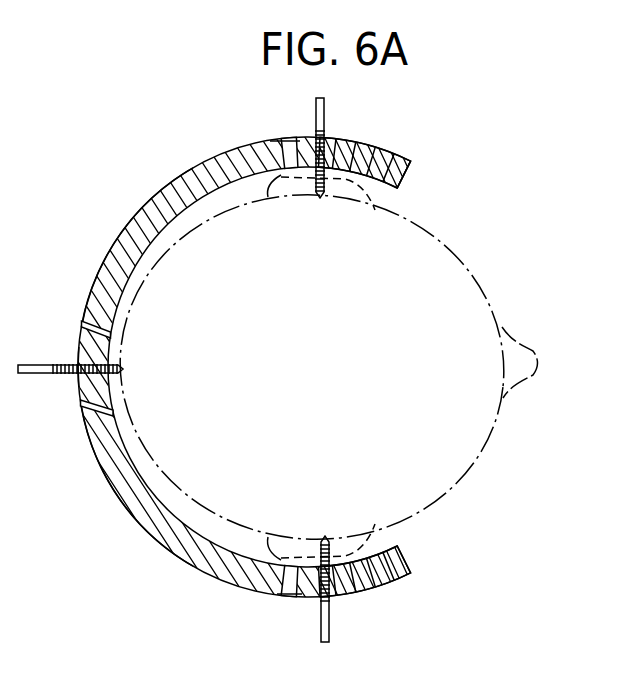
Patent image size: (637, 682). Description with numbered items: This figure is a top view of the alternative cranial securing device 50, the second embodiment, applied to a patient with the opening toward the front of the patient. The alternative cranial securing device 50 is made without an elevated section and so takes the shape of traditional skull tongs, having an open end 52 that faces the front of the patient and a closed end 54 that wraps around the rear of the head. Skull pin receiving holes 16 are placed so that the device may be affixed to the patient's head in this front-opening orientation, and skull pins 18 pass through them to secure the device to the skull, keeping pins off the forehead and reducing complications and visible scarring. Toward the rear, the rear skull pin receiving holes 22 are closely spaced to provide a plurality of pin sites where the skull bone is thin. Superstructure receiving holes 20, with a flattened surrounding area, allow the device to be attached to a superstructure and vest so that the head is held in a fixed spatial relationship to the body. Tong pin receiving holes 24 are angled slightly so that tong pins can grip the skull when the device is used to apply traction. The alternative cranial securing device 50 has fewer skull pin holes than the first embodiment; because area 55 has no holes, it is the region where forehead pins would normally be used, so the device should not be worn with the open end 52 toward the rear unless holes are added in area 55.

The skull pin receiving holes 16 is at (367, 147).
The skull pins 18 is at (325, 112).
The superstructure receiving holes 20 is at (288, 148).
The rear skull pin receiving holes 22 is at (110, 333).
The tong pin receiving holes 24 is at (377, 170).
The alternative cranial securing device 50 is at (87, 300).
The open end 52 is at (405, 175).
The closed end 54 is at (79, 388).
The area 55 is at (117, 237).